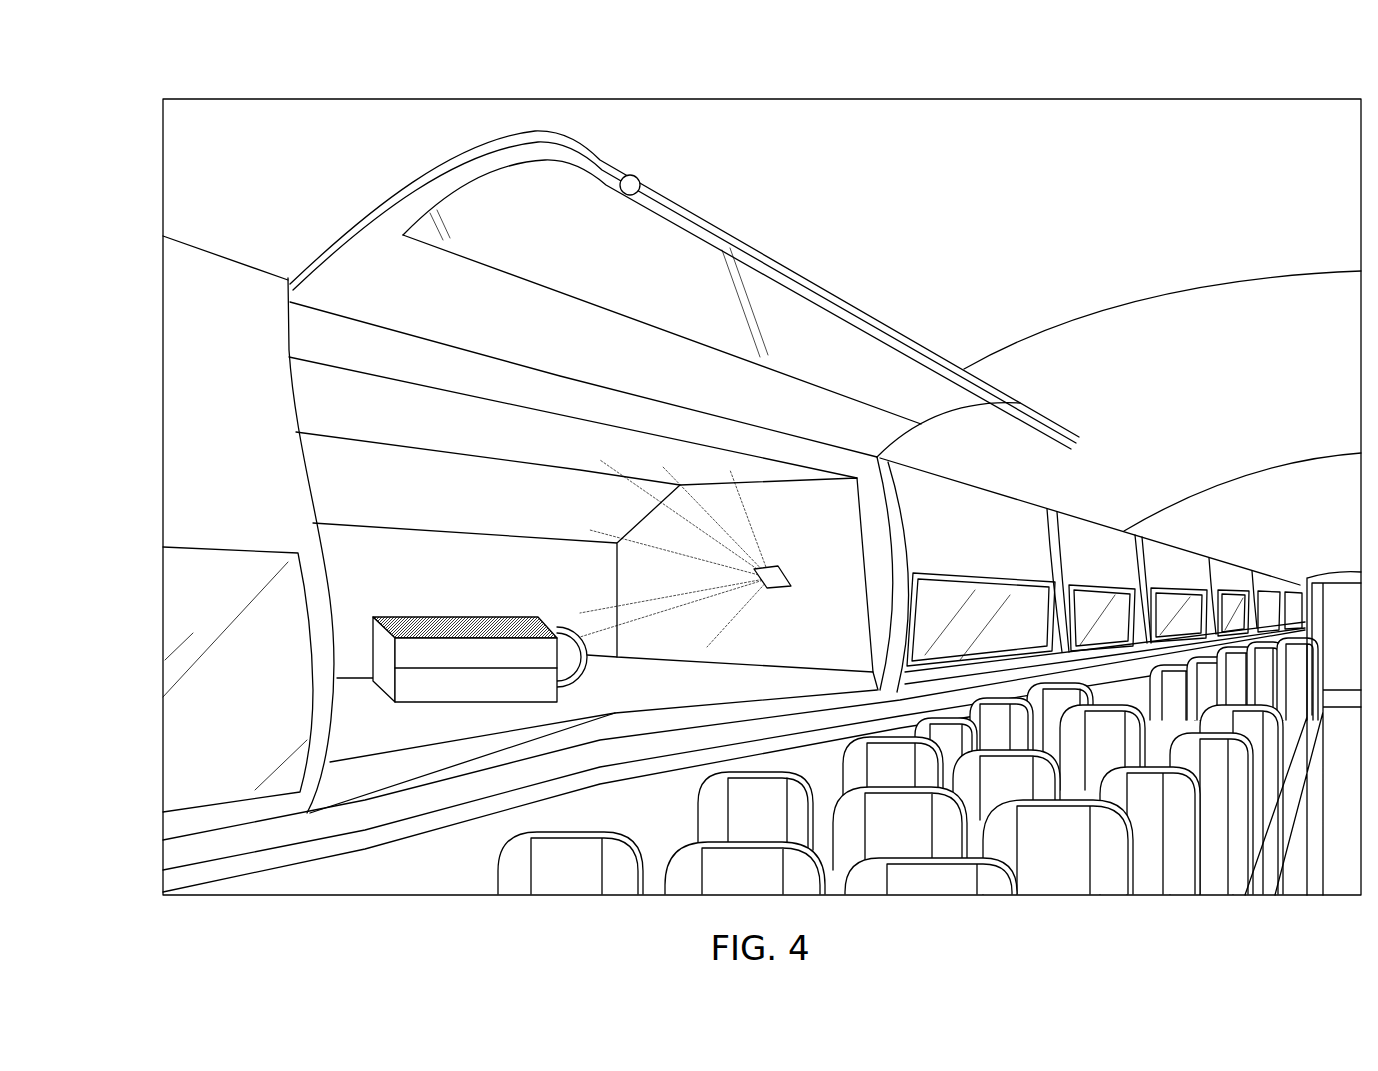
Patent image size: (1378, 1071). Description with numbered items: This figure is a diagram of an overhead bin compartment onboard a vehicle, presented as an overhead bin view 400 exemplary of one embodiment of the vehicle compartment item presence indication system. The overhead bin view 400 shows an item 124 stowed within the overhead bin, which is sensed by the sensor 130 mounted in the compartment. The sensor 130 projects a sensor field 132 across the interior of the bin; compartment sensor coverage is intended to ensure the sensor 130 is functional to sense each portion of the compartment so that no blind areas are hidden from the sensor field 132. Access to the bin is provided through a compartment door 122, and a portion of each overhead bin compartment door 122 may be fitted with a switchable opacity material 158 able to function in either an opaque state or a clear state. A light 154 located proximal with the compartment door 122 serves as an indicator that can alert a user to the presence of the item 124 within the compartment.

The overhead bin view 400 is at (129, 126).
The compartment door 122 is at (368, 275).
The switchable opacity material 158 is at (505, 178).
The light 154 is at (613, 173).
The sensor field 132 is at (680, 481).
The item 124 is at (443, 624).
The sensor 130 is at (780, 592).